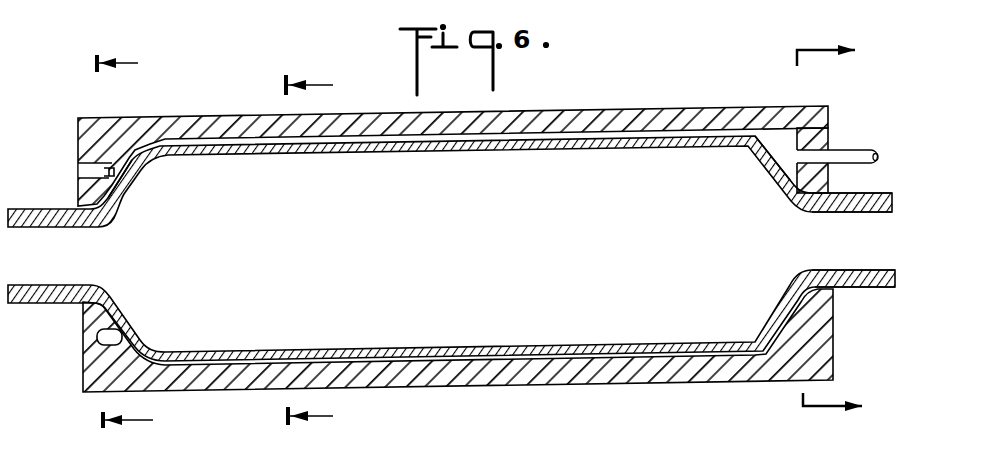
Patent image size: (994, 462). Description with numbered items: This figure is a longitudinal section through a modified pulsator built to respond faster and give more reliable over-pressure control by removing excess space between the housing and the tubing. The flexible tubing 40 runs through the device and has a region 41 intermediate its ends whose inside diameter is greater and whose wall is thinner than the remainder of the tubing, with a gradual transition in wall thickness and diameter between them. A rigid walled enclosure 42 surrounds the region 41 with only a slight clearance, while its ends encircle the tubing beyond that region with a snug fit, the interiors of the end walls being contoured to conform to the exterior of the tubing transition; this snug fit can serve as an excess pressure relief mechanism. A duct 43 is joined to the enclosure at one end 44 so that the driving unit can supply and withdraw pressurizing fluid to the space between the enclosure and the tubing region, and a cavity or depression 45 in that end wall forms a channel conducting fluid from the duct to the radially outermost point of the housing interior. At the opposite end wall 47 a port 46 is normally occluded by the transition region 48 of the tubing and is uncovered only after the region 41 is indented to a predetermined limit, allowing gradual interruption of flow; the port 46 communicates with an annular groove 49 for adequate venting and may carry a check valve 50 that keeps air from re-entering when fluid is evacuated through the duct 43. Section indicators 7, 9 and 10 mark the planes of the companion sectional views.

The flexible tubing 40 is at (868, 288).
The tubing region 41 is at (483, 153).
The rigid walled enclosure 42 is at (605, 112).
The duct 43 is at (871, 152).
The end wall 44 is at (827, 137).
The cavity or depression 45 is at (787, 152).
The port 46 is at (78, 172).
The end wall 47 is at (82, 323).
The transition region 48 is at (135, 191).
The annular groove 49 is at (85, 345).
The check valve 50 is at (115, 163).
The section line 7- 7 is at (319, 251).
The section line 9- 9 is at (125, 245).
The section line 10- 10 is at (829, 228).